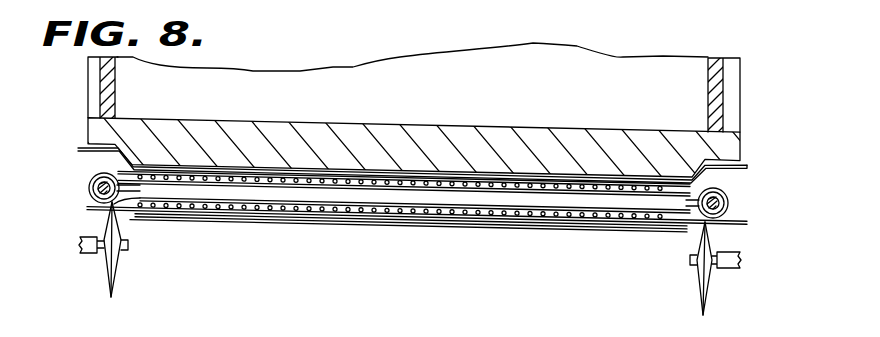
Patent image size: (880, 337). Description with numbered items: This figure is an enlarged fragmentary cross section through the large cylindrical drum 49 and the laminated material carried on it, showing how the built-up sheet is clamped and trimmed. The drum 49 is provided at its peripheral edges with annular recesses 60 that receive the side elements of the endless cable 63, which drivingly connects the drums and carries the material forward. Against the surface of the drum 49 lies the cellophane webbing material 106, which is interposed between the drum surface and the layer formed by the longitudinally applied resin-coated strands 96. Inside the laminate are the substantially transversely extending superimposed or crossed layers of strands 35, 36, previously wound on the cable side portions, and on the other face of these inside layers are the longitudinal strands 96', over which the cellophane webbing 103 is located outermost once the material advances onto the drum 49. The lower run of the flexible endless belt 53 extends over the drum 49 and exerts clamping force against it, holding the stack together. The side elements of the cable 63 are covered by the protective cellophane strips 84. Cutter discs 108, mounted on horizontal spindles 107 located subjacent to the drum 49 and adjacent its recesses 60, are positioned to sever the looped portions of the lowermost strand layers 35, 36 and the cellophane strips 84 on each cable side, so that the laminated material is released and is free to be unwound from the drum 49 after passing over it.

The cylindrical drum 49 is at (392, 132).
The annular recess 60 is at (78, 149).
The strand 35 is at (404, 136).
The strand 36 is at (417, 195).
The cellophane webbing material 106 is at (447, 178).
The strand 96 is at (404, 139).
The strand 96' is at (402, 237).
The webbing material 103 is at (455, 217).
The flexible endless belt 53 is at (411, 239).
The endless cable 63 is at (91, 190).
The cellophane strip 84 is at (167, 197).
The cutter disc 108 is at (118, 273).
The horizontal spindle 107 is at (84, 253).